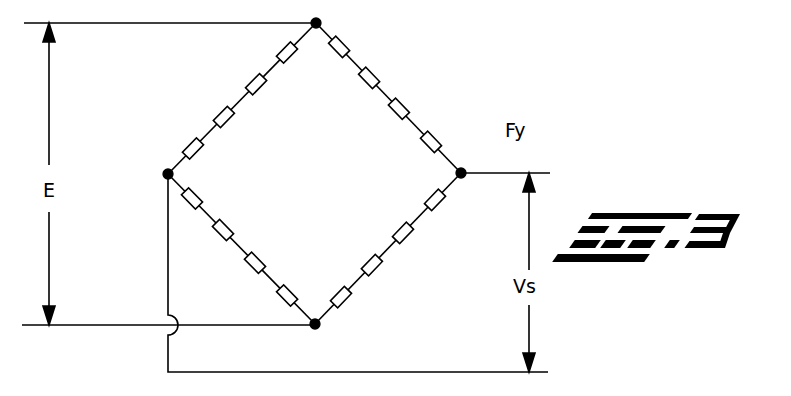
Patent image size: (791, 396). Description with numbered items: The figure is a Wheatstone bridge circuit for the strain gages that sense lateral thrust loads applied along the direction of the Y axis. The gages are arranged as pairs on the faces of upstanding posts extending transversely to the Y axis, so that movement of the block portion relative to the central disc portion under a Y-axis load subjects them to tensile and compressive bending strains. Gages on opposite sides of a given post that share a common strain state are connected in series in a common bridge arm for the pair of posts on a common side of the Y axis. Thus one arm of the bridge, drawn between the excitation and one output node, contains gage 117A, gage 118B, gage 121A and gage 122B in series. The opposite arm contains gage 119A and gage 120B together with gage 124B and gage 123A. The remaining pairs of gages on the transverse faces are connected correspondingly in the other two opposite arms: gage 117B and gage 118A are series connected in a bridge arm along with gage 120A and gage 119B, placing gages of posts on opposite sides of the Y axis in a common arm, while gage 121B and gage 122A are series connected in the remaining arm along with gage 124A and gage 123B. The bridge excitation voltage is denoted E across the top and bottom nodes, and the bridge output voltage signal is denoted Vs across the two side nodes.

The strain gage 117A is at (270, 47).
The strain gage 117B is at (354, 39).
The strain gage 118A is at (387, 74).
The strain gage 118B is at (237, 77).
The strain gage 119A is at (454, 205).
The strain gage 119B is at (452, 141).
The strain gage 120A is at (419, 106).
The strain gage 120B is at (421, 242).
The strain gage 121A is at (203, 112).
The strain gage 121B is at (210, 194).
The strain gage 122A is at (203, 236).
The strain gage 122B is at (170, 144).
The strain gage 123A is at (359, 306).
The strain gage 123B is at (265, 300).
The strain gage 124A is at (234, 266).
The strain gage 124B is at (390, 272).